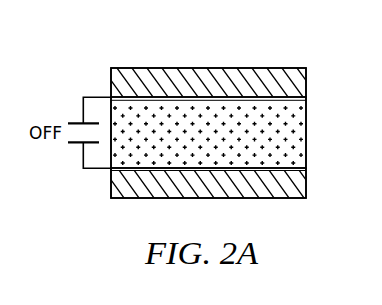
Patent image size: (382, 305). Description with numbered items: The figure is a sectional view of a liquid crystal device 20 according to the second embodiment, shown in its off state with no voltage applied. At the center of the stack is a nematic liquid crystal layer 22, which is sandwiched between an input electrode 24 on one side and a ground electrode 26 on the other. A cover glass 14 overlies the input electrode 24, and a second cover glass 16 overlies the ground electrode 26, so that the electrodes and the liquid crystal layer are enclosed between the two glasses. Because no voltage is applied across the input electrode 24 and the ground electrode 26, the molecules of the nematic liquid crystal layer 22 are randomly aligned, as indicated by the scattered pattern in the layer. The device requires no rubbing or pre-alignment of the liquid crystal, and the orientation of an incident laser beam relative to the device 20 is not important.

The liquid crystal device 20 is at (302, 53).
The cover glass 14 is at (160, 68).
The input electrode 24 is at (216, 97).
The nematic liquid crystal layer 22 is at (288, 127).
The ground electrode 26 is at (265, 171).
The cover glass 16 is at (163, 198).